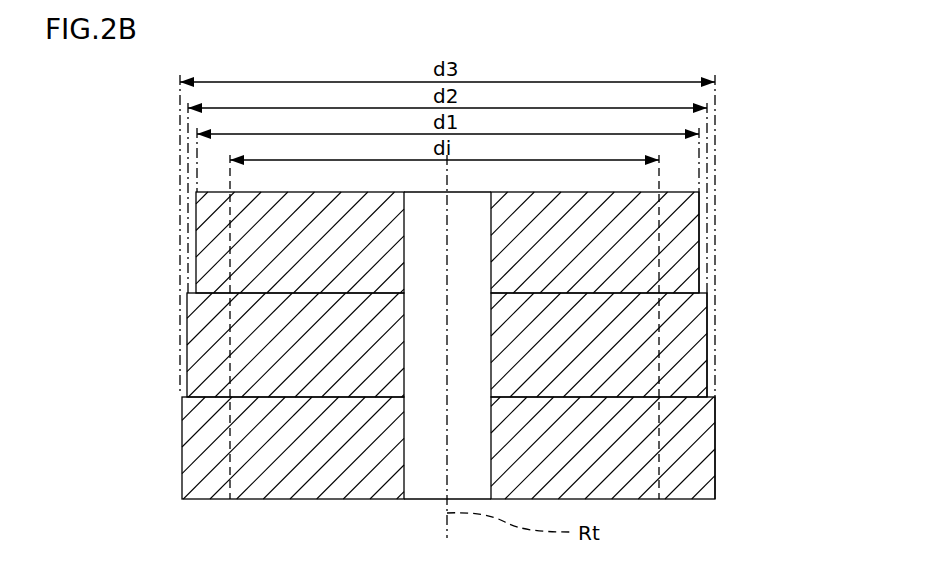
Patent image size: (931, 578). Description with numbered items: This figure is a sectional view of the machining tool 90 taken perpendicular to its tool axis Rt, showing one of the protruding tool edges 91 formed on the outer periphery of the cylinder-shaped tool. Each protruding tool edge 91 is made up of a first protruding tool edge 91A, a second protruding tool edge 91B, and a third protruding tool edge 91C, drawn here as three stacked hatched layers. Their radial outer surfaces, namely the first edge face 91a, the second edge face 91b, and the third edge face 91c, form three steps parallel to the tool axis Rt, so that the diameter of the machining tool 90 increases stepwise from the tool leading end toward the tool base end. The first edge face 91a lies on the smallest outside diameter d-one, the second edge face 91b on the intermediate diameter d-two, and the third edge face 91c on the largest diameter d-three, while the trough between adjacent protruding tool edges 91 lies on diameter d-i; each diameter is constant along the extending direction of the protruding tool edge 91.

The machining tool 90 is at (746, 139).
The protruding tool edge 91 is at (804, 477).
The first protruding tool edge 91A is at (680, 257).
The second protruding tool edge 91B is at (690, 351).
The third protruding tool edge 91C is at (700, 455).
The first edge face 91a is at (703, 245).
The second edge face 91b is at (708, 333).
The third edge face 91c is at (716, 430).